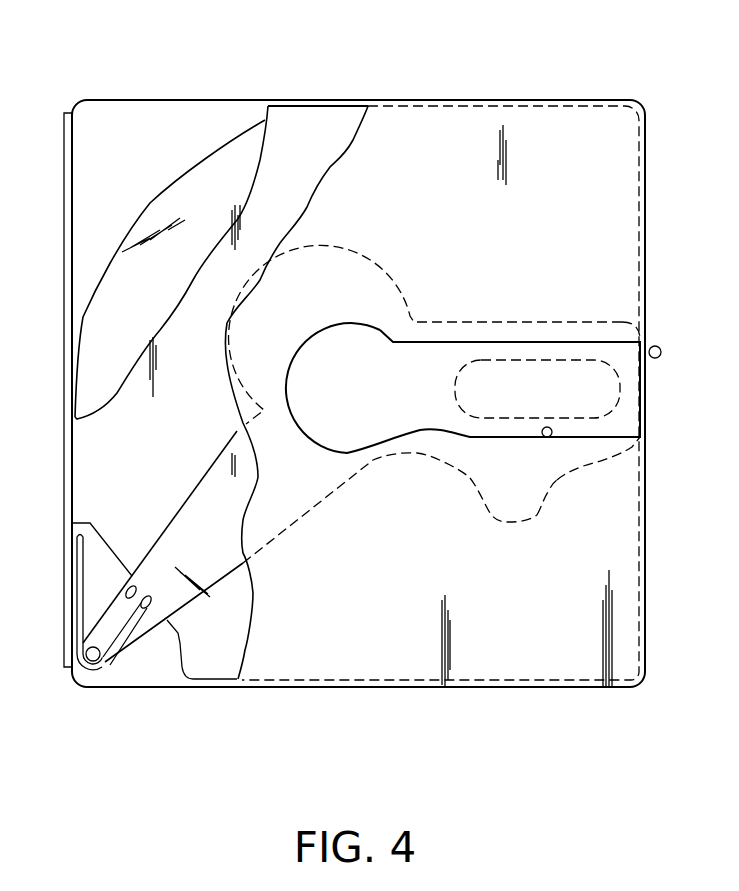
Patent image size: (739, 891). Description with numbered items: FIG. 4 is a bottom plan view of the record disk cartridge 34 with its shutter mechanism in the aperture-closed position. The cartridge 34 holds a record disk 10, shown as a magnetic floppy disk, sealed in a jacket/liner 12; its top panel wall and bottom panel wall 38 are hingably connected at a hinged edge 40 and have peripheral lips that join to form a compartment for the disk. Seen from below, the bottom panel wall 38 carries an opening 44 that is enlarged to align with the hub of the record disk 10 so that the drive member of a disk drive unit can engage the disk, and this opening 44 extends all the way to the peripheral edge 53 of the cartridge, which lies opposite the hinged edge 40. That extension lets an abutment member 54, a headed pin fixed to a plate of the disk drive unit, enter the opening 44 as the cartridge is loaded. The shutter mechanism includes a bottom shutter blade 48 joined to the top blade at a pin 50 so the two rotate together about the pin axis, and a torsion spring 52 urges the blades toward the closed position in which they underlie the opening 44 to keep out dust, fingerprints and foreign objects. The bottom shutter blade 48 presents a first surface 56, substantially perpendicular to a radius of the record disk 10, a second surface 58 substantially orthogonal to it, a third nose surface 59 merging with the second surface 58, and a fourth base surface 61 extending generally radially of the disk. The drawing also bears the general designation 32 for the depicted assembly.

The record disk 10 is at (100, 322).
The jacket/liner 12 is at (90, 450).
The cartridge assembly 32 is at (381, 352).
The record disk cartridge 34 is at (465, 112).
The bottom panel wall 38 is at (470, 245).
The hinged edge 40 is at (62, 213).
The opening 44 is at (545, 437).
The bottom shutter blade 48 is at (193, 507).
The pin 50 is at (97, 668).
The torsion spring 52 is at (80, 595).
The peripheral edge 53 is at (646, 498).
The abutment member 54 is at (655, 346).
The first surface 56 is at (642, 405).
The second surface 58 is at (603, 463).
The third nose surface 59 is at (550, 488).
The fourth base surface 61 is at (508, 522).